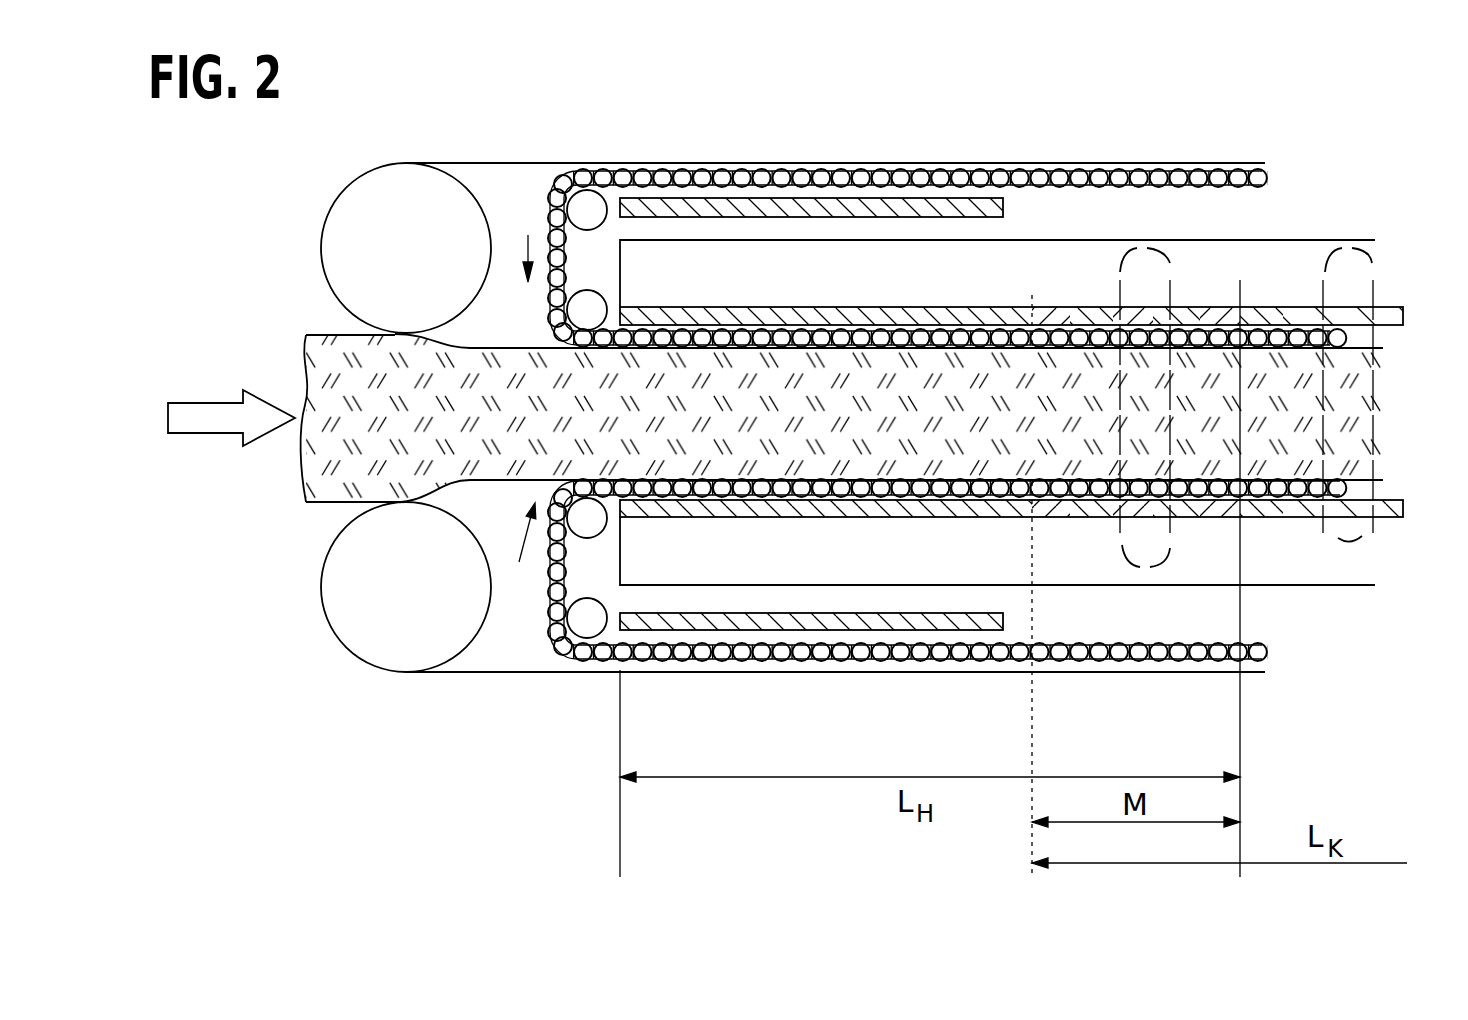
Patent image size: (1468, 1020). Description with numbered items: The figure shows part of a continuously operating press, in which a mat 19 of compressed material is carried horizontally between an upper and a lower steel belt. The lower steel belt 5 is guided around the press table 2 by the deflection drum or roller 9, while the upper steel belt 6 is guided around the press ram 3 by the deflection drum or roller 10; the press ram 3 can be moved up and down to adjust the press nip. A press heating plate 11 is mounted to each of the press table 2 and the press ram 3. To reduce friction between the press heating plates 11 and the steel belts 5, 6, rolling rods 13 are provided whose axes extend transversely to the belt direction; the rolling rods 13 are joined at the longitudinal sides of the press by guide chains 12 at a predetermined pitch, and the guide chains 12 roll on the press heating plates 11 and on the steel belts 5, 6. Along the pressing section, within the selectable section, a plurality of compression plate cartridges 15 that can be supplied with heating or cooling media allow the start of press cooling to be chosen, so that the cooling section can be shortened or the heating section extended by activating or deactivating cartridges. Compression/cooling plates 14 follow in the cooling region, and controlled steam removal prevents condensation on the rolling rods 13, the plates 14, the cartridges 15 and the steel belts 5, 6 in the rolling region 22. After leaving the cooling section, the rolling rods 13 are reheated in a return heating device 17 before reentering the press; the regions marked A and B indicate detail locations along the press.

The press table 2 is at (650, 538).
The press ram 3 is at (683, 265).
The steel belt 5 is at (472, 672).
The steel belt 6 is at (580, 162).
The deflection drum or roller 9 is at (397, 573).
The deflection drum or roller 10 is at (398, 262).
The press heating plate 11 is at (798, 518).
The guide chain 12 is at (780, 173).
The rolling rod 13 is at (1118, 178).
The compression/cooling plate 14 is at (1263, 520).
The compression plate cartridge 15 is at (1093, 305).
The return heating device 17 is at (902, 213).
The mat of compressed material 19 is at (538, 402).
The rolling region 22 is at (1208, 520).
The region A is at (1172, 248).
The region B is at (1372, 255).